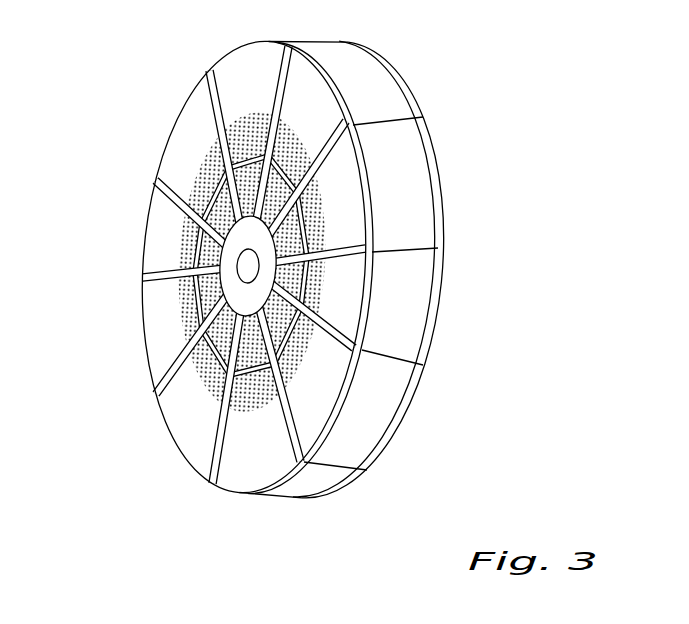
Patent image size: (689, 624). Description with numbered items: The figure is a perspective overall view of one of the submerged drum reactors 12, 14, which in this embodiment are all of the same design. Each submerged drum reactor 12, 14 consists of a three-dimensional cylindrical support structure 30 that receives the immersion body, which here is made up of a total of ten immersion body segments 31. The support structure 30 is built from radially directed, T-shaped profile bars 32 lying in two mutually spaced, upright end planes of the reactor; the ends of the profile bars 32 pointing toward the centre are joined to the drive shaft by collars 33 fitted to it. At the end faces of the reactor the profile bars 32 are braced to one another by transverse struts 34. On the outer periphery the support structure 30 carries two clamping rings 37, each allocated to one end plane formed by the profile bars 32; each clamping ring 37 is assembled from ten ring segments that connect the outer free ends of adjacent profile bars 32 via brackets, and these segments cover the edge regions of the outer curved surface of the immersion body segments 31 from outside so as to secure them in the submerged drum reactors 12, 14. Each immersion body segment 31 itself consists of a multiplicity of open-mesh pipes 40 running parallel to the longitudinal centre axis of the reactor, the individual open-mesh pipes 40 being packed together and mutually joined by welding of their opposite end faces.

The submerged drum reactor 12 is at (442, 116).
The submerged drum reactor 14 is at (314, 300).
The support structure 30 is at (307, 524).
The immersion body segment 31 is at (373, 85).
The profile bar 32 is at (210, 455).
The collar 33 is at (205, 185).
The transverse strut 34 is at (180, 310).
The clamping ring 37 is at (437, 183).
The open-mesh pipe 40 is at (242, 236).